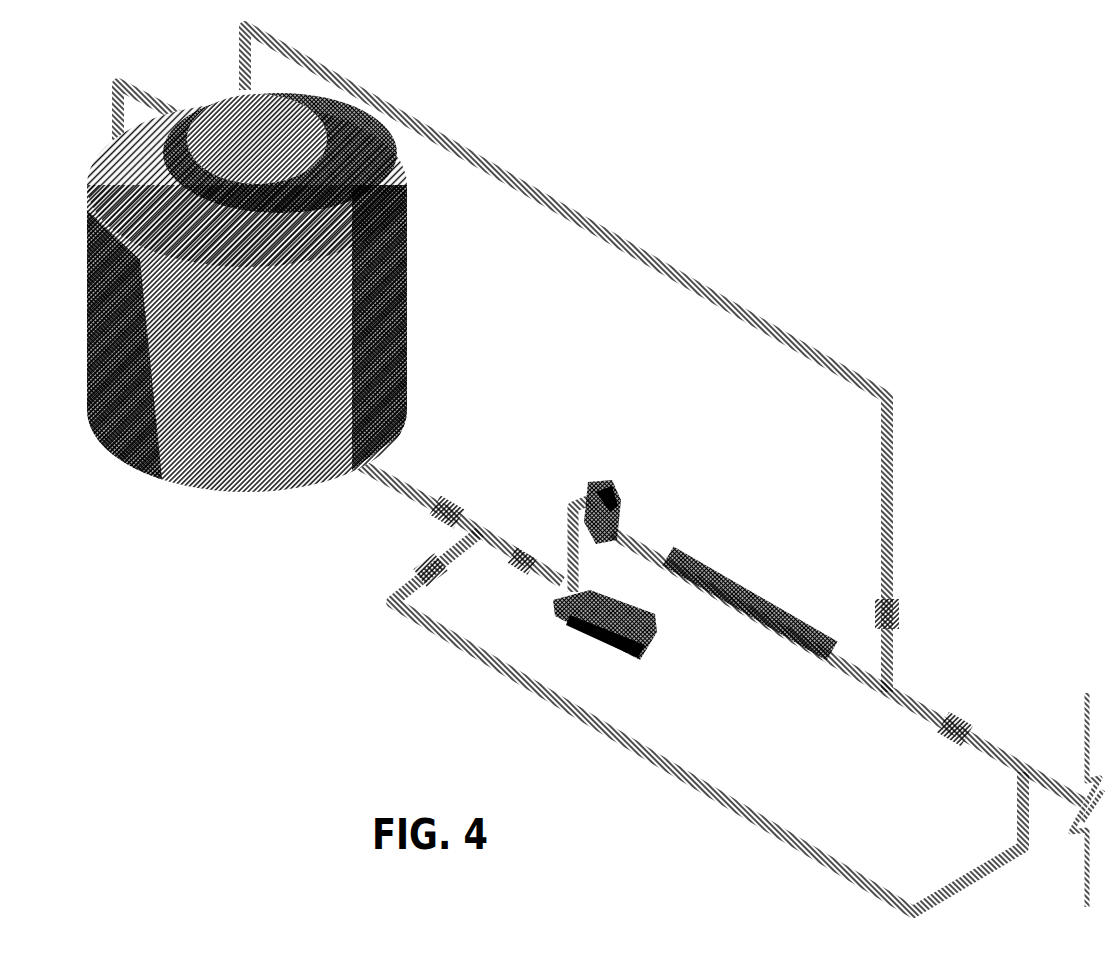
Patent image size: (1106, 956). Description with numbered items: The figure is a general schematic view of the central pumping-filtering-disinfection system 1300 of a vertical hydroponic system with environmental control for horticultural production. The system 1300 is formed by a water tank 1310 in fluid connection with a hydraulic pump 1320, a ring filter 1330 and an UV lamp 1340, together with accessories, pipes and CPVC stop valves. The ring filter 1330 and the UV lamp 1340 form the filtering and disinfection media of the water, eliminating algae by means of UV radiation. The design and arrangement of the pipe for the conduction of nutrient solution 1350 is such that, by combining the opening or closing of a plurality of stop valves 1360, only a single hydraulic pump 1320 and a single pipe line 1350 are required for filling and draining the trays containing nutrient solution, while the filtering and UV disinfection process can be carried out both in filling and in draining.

The central pumping-filtering-disinfection system 1300 is at (610, 220).
The water tank 1310 is at (380, 205).
The hydraulic pump 1320 is at (630, 620).
The ring filter 1330 is at (598, 495).
The UV lamp 1340 is at (744, 590).
The pipe for the conduction of nutrient solution 1350 is at (760, 322).
The stop valves 1360 is at (426, 509).